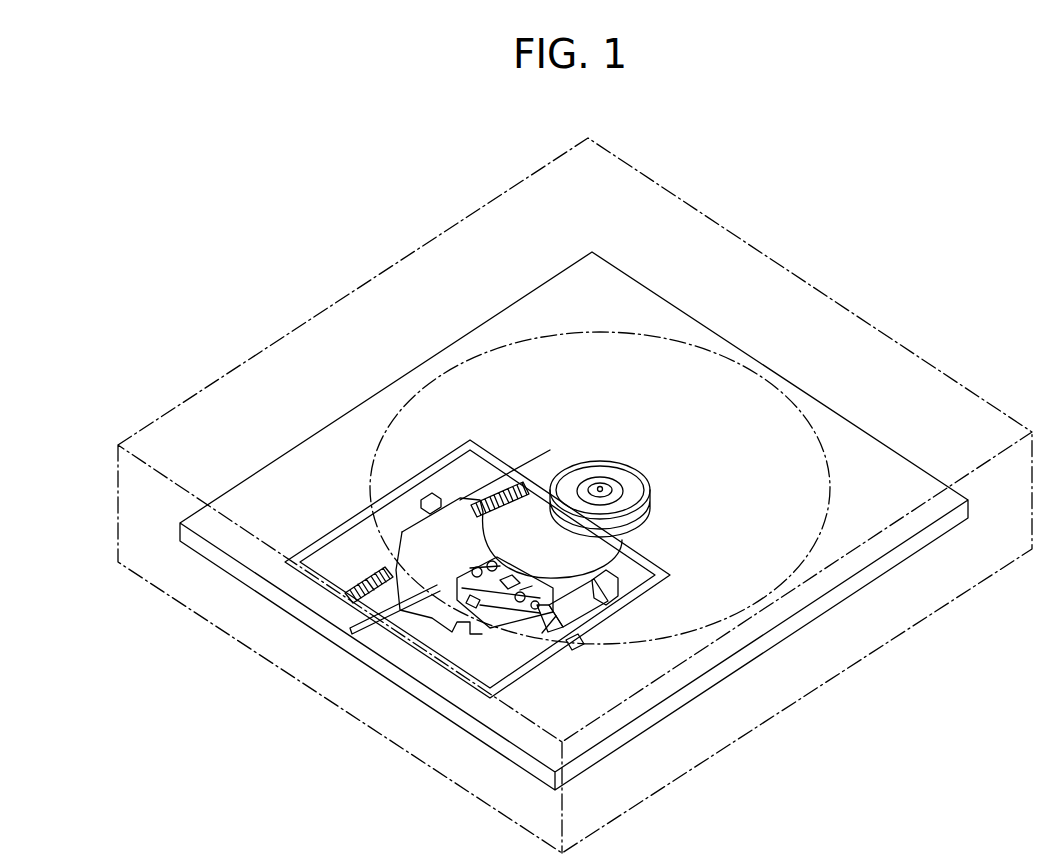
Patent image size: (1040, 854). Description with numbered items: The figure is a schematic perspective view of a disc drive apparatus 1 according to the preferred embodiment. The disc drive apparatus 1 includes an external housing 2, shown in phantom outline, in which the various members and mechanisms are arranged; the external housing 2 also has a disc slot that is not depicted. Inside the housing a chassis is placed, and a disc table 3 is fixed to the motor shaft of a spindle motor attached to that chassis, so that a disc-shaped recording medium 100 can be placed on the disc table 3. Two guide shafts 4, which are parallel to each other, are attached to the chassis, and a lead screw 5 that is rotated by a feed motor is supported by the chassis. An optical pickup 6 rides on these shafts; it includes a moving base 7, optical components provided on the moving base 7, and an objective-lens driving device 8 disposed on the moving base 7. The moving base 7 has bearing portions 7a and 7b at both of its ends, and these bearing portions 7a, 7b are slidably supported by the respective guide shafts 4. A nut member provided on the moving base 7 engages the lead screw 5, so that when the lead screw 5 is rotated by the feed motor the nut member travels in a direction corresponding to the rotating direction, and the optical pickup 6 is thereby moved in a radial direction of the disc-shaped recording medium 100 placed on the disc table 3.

The disc drive apparatus 1 is at (854, 226).
The external housing 2 is at (842, 307).
The disc table 3 is at (634, 479).
The guide shafts 4 is at (470, 480).
The lead screw 5 is at (519, 491).
The optical pickup 6 is at (402, 530).
The moving base 7 is at (433, 573).
The bearing portion 7a is at (430, 493).
The bearing portion 7b is at (577, 630).
The objective-lens driving device 8 is at (448, 620).
The disc-shaped recording medium 100 is at (623, 333).